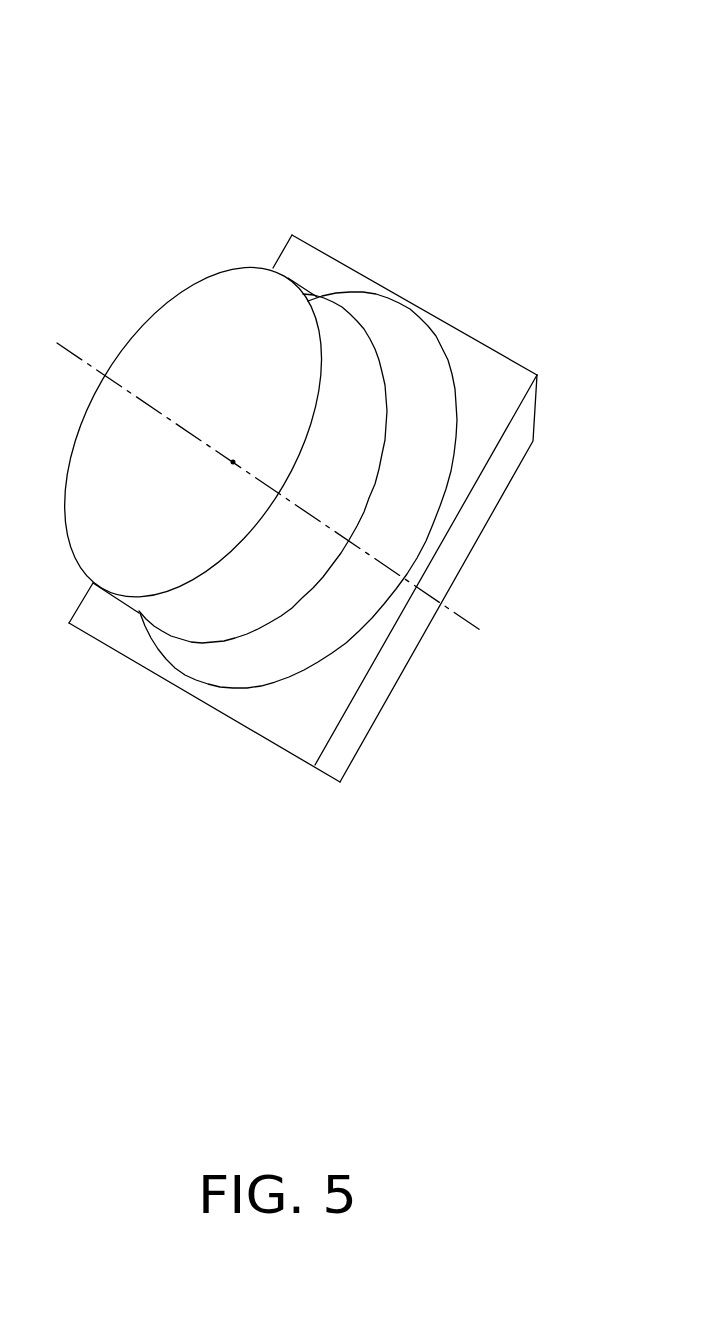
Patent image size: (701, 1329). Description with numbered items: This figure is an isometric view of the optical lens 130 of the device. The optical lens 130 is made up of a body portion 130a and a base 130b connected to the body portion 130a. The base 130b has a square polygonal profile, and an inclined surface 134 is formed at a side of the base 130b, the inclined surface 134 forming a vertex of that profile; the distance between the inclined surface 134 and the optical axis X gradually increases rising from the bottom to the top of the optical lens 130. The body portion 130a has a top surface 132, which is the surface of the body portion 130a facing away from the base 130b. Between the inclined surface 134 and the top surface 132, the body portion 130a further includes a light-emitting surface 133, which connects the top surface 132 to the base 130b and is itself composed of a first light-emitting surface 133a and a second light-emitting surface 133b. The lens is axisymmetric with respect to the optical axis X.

The optical lens 130 is at (321, 421).
The body portion 130a is at (293, 496).
The base 130b is at (307, 735).
The top surface 132 is at (205, 328).
The light-emitting surface 133 is at (371, 411).
The first light-emitting surface 133a is at (350, 340).
The second light-emitting surface 133b is at (418, 350).
The inclined surface 134 is at (538, 405).